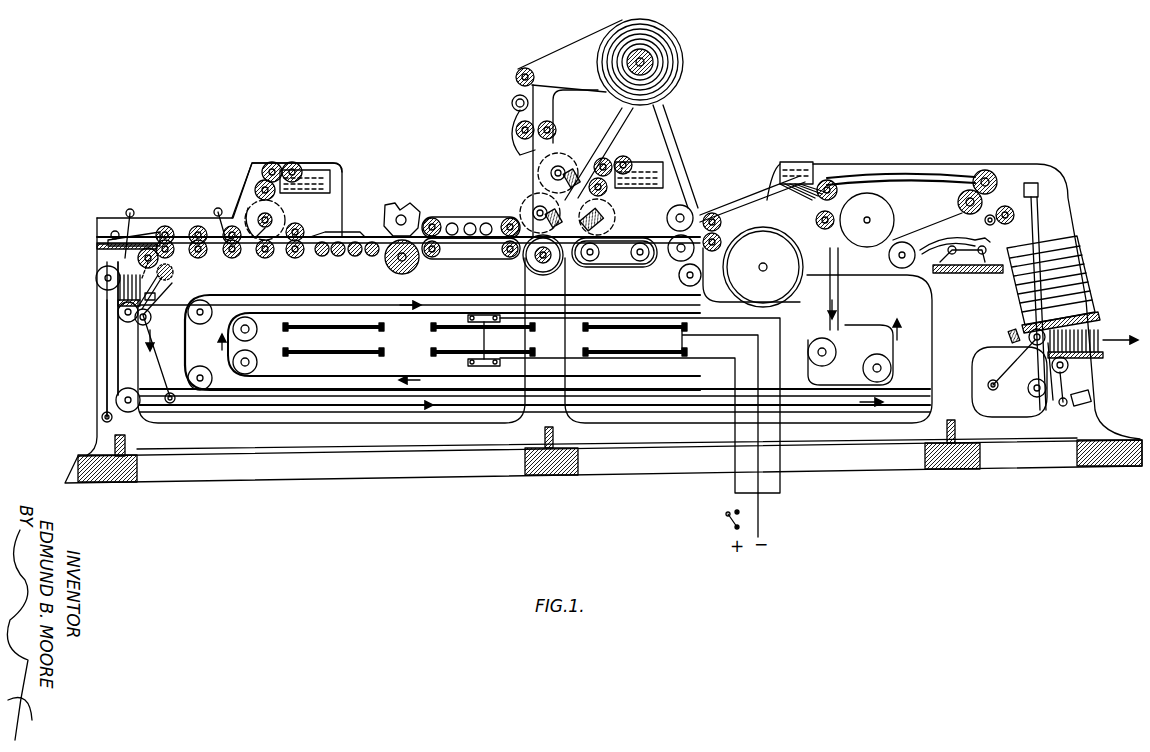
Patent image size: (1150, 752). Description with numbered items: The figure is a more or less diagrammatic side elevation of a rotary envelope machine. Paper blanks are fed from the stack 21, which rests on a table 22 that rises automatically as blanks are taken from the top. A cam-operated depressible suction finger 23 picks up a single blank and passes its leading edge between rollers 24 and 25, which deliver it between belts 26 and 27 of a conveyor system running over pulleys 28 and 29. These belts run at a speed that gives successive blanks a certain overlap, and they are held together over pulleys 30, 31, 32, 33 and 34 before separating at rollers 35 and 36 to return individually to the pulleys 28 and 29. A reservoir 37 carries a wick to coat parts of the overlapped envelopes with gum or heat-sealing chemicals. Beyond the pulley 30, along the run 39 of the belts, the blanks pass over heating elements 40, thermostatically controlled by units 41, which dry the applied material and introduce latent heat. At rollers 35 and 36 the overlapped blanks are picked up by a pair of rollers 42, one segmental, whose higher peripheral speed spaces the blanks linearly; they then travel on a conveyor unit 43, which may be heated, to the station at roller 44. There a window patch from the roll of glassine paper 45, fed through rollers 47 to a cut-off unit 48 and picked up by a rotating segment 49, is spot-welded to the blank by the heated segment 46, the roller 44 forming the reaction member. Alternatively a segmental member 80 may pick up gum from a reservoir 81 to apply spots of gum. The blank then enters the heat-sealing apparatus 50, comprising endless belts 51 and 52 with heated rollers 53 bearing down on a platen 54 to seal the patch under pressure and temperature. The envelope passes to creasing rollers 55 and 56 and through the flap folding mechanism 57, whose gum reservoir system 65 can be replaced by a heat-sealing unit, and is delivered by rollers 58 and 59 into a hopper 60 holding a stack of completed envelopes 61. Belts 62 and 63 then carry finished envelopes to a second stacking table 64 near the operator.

The stack 21 is at (1072, 246).
The table 22 is at (1090, 312).
The depressible suction finger 23 is at (1000, 238).
The roller 24 is at (990, 215).
The roller 25 is at (1013, 214).
The belt 26 is at (914, 175).
The belt 27 is at (940, 184).
The pulley 28 is at (990, 172).
The pulley 29 is at (960, 207).
The pulley 30 is at (862, 232).
The pulley 31 is at (822, 337).
The pulley 32 is at (258, 358).
The pulley 33 is at (258, 331).
The pulley 34 is at (745, 292).
The roller 35 is at (715, 250).
The roller 36 is at (722, 224).
The reservoir 37 is at (815, 163).
The run of the belts 39 is at (795, 368).
The heating elements 40 is at (342, 338).
The thermostatic control units 41 is at (505, 343).
The pair of rollers 42 is at (690, 212).
The conveyor unit 43 is at (614, 252).
The roller 44 is at (535, 277).
The roll of glassine paper 45 is at (684, 66).
The segment 46 is at (550, 202).
The rollers 47 is at (536, 88).
The cut-off unit 48 is at (527, 157).
The rotating segment 49 is at (586, 142).
The heat-sealing apparatus 50 is at (440, 215).
The endless belt 51 is at (478, 204).
The endless belt 52 is at (465, 262).
The rollers 53 is at (495, 222).
The platen 54 is at (471, 248).
The creasing roller 55 is at (412, 206).
The creasing roller 56 is at (396, 275).
The flap folding mechanism 57 is at (362, 162).
The roller 58 is at (155, 240).
The roller 59 is at (175, 258).
The hopper 60 is at (150, 297).
The stack of completed envelopes 61 is at (140, 290).
The belt 62 is at (118, 362).
The belt 63 is at (122, 383).
The second stacking table 64 is at (1100, 352).
The gum reservoir system 65 is at (325, 165).
The segmental member 80 is at (607, 226).
The reservoir 81 is at (640, 157).